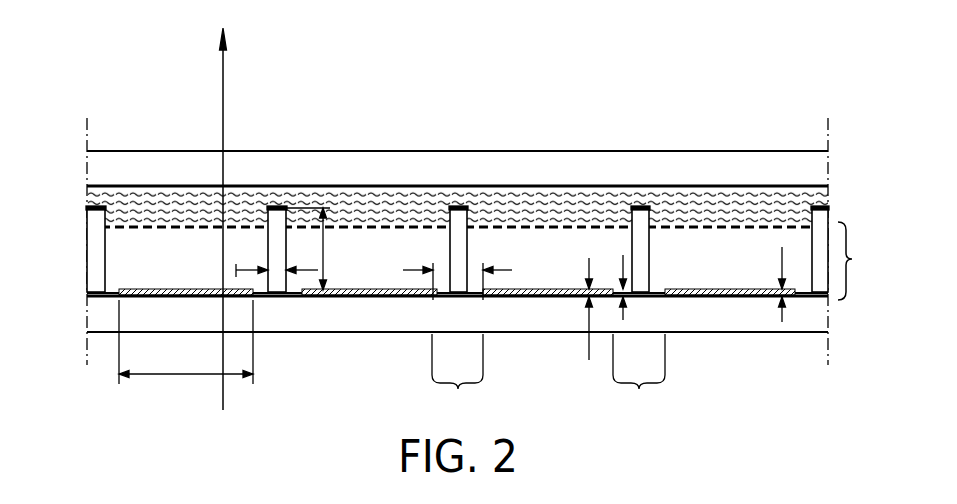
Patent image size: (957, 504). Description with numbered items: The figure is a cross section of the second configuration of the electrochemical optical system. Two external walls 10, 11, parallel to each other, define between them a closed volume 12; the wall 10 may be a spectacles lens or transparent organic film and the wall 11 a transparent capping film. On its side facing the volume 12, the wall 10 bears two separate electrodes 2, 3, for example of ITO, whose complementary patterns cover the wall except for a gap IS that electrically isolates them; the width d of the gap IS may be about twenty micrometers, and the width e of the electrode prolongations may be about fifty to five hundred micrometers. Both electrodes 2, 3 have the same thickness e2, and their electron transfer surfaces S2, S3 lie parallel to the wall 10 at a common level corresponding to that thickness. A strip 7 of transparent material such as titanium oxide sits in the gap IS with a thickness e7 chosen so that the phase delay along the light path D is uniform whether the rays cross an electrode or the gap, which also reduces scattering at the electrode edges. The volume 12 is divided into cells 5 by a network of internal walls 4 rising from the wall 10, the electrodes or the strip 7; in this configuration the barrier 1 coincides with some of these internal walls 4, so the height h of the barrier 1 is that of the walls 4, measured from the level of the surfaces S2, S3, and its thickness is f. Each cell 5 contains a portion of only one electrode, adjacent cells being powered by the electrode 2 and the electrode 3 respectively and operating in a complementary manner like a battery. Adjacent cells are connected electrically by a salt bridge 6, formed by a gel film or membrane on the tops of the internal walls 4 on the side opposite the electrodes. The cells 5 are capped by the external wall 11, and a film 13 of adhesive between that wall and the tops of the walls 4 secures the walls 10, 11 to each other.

The barrier 1 is at (457, 190).
The internal walls 4 is at (281, 208).
The electrode 2 is at (145, 291).
The electrode 3 is at (312, 297).
The cells 5 is at (185, 264).
The salt bridge 6 is at (283, 208).
The strip 7 is at (292, 297).
The external wall 10 is at (812, 315).
The external wall 11 is at (785, 165).
The closed volume 12 is at (485, 261).
The film of adhesive 13 is at (818, 200).
The electron transfer surface S2 is at (128, 280).
The electron transfer surface S3 is at (345, 280).
The gap IS is at (548, 375).
The path for light rays D is at (234, 217).
The width of the electrode prolongations e is at (186, 348).
The thickness of the barrier f is at (277, 261).
The height of the barrier h is at (315, 249).
The width of the gap d is at (466, 279).
The thickness of the electrodes e2 is at (671, 303).
The thickness of the strip e7 is at (612, 278).